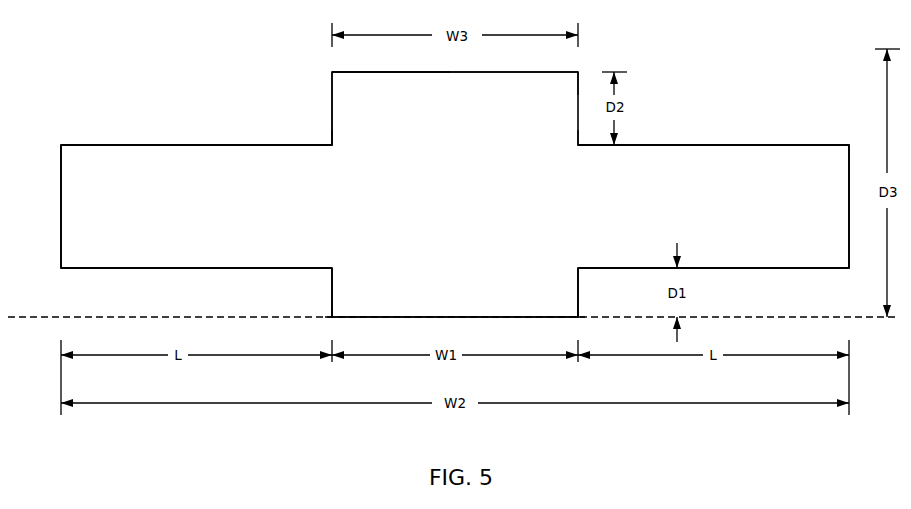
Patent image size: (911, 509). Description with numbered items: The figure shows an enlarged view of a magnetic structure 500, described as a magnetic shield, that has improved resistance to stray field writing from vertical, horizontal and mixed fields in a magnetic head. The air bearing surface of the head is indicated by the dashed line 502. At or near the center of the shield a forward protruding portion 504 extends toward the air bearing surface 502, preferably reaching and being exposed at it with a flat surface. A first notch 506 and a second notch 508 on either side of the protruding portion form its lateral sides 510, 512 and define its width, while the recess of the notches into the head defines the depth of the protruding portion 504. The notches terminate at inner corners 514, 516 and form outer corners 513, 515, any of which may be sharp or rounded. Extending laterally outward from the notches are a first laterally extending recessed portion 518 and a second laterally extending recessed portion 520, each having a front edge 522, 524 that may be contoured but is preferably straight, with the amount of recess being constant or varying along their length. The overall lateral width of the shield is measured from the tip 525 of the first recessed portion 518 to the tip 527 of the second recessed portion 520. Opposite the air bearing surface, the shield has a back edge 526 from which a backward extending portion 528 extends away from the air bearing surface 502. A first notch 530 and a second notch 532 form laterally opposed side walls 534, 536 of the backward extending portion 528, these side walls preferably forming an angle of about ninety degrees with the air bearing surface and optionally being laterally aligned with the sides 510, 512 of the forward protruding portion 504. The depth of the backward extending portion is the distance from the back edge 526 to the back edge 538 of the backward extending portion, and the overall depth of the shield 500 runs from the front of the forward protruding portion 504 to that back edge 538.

The magnetic structure 500 is at (481, 69).
The air bearing surface 502 is at (752, 318).
The forward protruding portion 504 is at (420, 292).
The first notch 506 is at (580, 280).
The second notch 508 is at (332, 292).
The lateral side of protruding portion 510 is at (578, 291).
The lateral side of protruding portion 512 is at (332, 290).
The outer corner 513 is at (580, 318).
The inner corner 514 is at (578, 268).
The outer corner 515 is at (332, 317).
The inner corner 516 is at (332, 262).
The first laterally extending recessed portion 518 is at (790, 205).
The second laterally extending recessed portion 520 is at (195, 205).
The front edge 522 is at (720, 268).
The front edge 524 is at (200, 268).
The tip 525 is at (850, 171).
The back edge 526 is at (190, 145).
The tip 527 is at (61, 193).
The backward extending portion 528 is at (418, 94).
The first notch 530 is at (578, 88).
The second notch 532 is at (332, 118).
The side wall 534 is at (578, 110).
The side wall 536 is at (333, 97).
The back edge of backward extending portion 538 is at (410, 72).